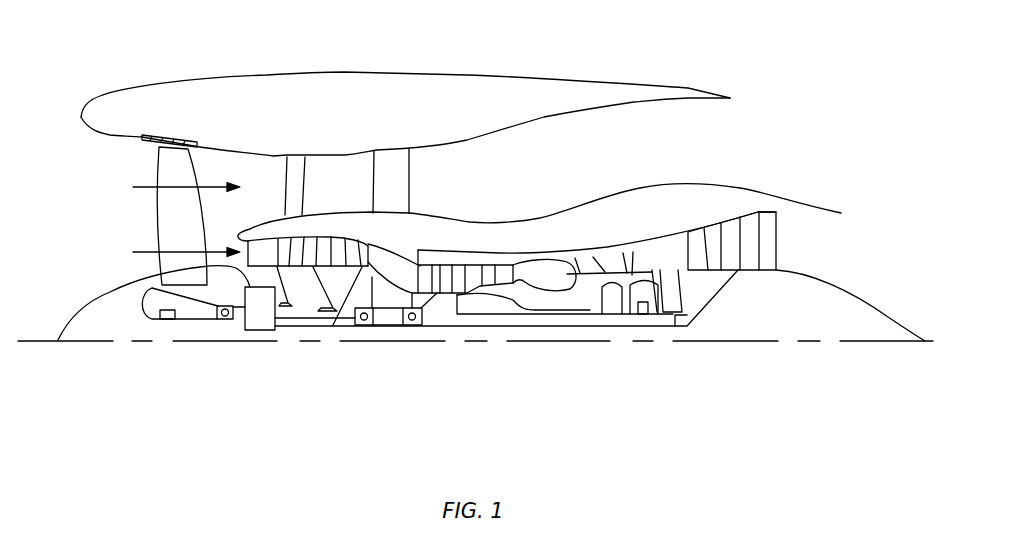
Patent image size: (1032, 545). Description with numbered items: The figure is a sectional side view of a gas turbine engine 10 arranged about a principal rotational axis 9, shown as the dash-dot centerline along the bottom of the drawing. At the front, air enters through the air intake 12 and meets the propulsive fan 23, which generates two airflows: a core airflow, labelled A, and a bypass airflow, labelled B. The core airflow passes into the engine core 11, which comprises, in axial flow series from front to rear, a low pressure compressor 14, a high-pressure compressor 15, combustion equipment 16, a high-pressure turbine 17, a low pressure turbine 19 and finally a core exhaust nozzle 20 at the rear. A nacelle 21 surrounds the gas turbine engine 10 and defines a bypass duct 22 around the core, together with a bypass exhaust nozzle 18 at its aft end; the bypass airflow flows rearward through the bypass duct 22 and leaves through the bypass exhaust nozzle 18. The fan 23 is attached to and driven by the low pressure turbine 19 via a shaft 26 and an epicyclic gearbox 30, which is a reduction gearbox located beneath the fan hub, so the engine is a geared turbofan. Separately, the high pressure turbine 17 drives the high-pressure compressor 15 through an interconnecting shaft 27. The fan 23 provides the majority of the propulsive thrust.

The principal rotational axis 9 is at (787, 343).
The gas turbine engine 10 is at (157, 86).
The core 11 is at (518, 233).
The air intake 12 is at (106, 166).
The low pressure compressor 14 is at (328, 243).
The high-pressure compressor 15 is at (473, 278).
The combustion equipment 16 is at (551, 276).
The high-pressure turbine 17 is at (614, 262).
The bypass exhaust nozzle 18 is at (728, 139).
The low pressure turbine 19 is at (748, 232).
The core exhaust nozzle 20 is at (806, 244).
The nacelle 21 is at (388, 88).
The bypass duct 22 is at (677, 150).
The propulsive fan 23 is at (162, 221).
The shaft 26 is at (469, 328).
The interconnecting shaft 27 is at (511, 316).
The epicyclic gearbox 30 is at (258, 320).